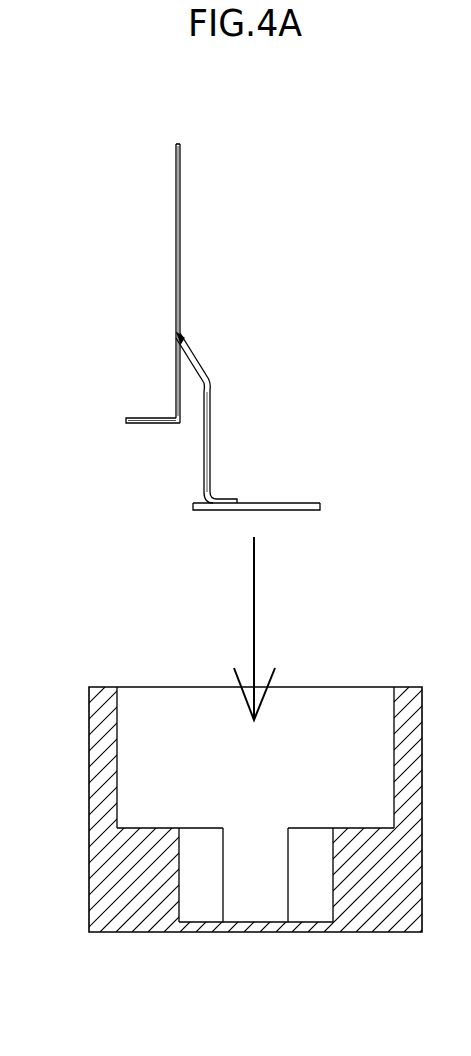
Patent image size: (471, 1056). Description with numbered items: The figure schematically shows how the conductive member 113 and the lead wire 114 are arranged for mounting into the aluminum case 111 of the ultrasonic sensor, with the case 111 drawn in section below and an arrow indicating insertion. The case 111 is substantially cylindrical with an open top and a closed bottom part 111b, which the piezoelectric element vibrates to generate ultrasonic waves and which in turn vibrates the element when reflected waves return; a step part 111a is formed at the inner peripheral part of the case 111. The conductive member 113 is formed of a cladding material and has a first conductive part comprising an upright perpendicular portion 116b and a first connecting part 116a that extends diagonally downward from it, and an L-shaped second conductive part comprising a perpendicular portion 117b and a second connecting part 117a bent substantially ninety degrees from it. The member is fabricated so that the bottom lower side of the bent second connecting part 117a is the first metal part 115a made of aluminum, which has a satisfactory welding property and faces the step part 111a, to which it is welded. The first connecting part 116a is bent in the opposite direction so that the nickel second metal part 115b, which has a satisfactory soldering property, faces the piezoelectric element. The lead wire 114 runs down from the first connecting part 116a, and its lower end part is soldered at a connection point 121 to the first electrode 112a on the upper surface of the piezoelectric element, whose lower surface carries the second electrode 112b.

The case 111 is at (423, 828).
The step part 111a is at (146, 829).
The bottom part 111b is at (259, 927).
The first electrode 112a is at (298, 503).
The second electrode 112b is at (298, 511).
The conductive member 113 is at (186, 154).
The lead wire 114 is at (211, 414).
The first metal part 115a is at (181, 239).
The second metal part 115b is at (176, 227).
The first connecting part 116a is at (194, 351).
The perpendicular portion 116b is at (176, 293).
The second connecting part 117a is at (145, 423).
The perpendicular portion 117b is at (181, 275).
The connection point 121 is at (227, 497).